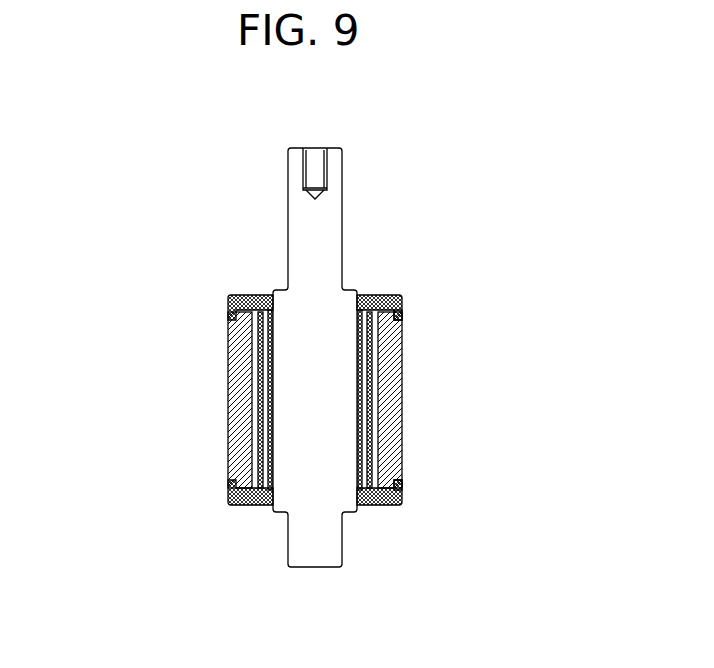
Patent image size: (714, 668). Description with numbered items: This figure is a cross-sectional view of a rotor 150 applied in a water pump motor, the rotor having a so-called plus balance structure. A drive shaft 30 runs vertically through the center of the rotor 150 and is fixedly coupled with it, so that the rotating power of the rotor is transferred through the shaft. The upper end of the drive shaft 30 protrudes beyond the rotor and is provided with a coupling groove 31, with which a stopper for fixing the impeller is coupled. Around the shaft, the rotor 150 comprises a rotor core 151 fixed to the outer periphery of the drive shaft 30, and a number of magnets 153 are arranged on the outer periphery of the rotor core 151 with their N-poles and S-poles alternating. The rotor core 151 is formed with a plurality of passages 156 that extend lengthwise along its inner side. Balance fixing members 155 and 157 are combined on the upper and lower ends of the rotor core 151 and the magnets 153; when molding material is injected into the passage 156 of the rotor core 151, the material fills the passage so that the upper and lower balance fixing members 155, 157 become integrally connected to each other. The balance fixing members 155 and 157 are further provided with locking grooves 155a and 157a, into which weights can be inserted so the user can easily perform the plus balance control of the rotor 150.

The drive shaft 30 is at (323, 218).
The coupling groove 31 is at (322, 160).
The rotor 150 is at (186, 400).
The rotor core 151 is at (358, 410).
The magnets 153 is at (403, 435).
The balance fixing member 155 is at (373, 294).
The locking groove 155a is at (394, 293).
The passage 156 is at (371, 345).
The balance fixing member 157 is at (373, 504).
The locking groove 157a is at (396, 504).